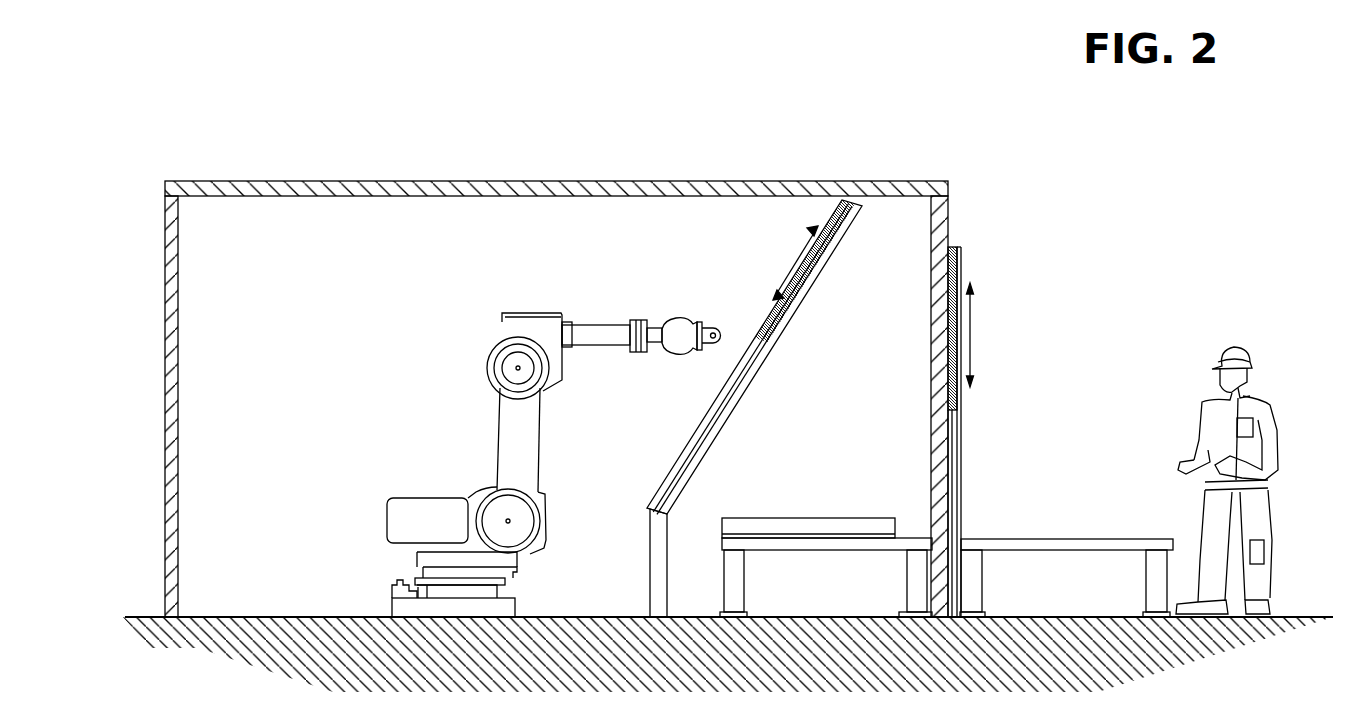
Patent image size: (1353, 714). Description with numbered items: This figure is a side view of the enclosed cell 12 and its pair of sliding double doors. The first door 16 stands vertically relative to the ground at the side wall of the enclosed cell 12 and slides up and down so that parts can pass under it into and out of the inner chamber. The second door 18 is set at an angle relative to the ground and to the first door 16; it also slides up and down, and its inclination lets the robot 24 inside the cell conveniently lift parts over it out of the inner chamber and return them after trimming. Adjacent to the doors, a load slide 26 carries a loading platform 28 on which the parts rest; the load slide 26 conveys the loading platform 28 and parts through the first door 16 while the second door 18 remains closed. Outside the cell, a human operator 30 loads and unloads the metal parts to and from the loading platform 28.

The enclosed cell 12 is at (500, 181).
The first door 16 is at (957, 271).
The second door 18 is at (814, 271).
The robot 24 is at (597, 332).
The load slide 26 is at (815, 547).
The loading platform 28 is at (862, 538).
The human operator 30 is at (1267, 418).